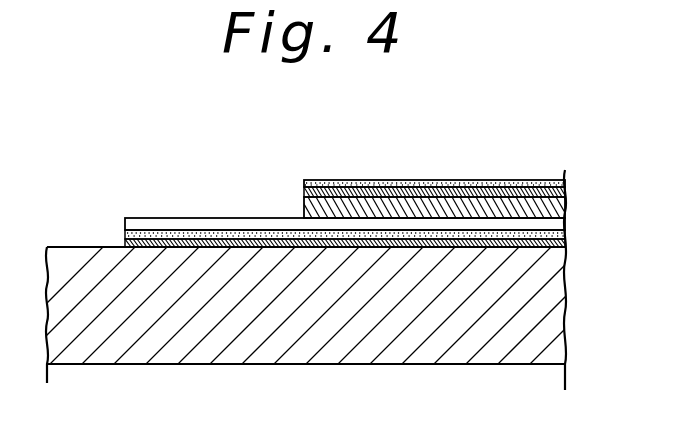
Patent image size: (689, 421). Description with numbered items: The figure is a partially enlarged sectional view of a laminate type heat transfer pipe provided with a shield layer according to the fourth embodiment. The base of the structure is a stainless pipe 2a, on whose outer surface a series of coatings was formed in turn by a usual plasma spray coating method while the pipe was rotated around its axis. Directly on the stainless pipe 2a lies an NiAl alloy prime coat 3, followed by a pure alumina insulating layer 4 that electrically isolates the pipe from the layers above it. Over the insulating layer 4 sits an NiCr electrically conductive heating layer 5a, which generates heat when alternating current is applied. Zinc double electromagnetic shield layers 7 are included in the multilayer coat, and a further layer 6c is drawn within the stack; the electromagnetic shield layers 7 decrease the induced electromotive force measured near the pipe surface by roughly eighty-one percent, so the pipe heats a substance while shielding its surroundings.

The stainless pipe 2a is at (84, 266).
The NiAl alloy prime coat 3 is at (153, 245).
The alumina insulating layer 4 is at (240, 223).
The NiCr electrically conductive heating layer 5a is at (323, 203).
The upper thin layer 6c is at (375, 190).
The electromagnetic shield layers 7 is at (192, 235).